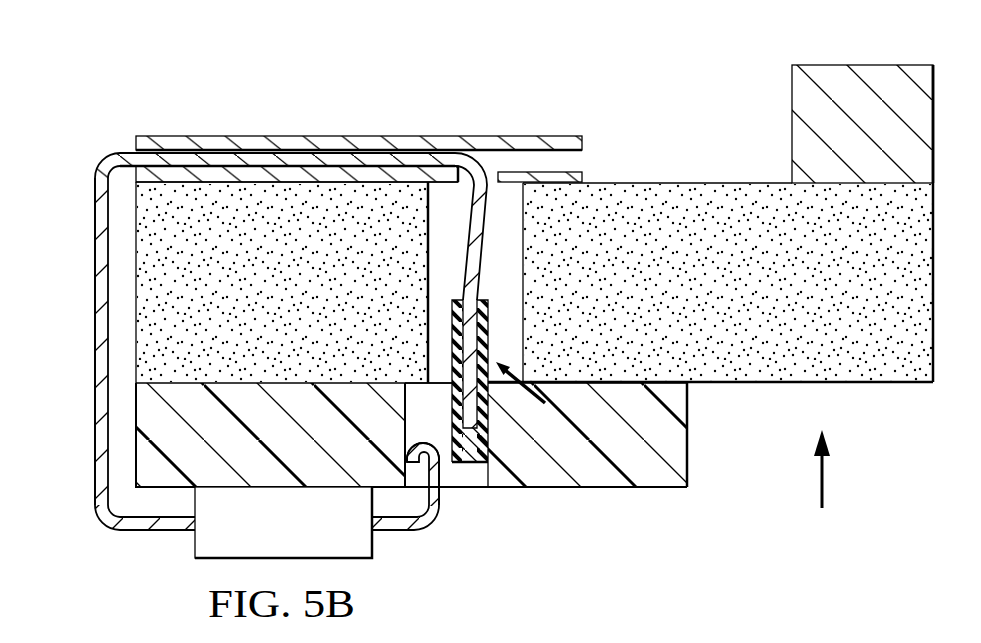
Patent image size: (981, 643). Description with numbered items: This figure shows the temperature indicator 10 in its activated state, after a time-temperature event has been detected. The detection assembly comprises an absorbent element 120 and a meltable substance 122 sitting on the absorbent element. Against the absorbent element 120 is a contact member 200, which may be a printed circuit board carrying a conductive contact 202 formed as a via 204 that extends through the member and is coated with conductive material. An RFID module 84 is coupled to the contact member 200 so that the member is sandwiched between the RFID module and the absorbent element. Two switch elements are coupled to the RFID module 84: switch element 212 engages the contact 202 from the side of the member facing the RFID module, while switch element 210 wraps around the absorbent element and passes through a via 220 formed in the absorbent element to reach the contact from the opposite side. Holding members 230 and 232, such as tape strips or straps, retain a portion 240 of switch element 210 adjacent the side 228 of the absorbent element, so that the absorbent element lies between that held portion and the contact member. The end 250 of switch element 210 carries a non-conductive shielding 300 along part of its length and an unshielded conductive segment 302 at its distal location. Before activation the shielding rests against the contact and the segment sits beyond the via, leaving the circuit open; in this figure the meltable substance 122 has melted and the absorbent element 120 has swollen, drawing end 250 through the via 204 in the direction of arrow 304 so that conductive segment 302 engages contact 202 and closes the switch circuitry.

The temperature indicator 10 is at (352, 57).
The RFID module 84 is at (197, 543).
The absorbent element 120 is at (839, 378).
The meltable substance 122 is at (876, 73).
The contact member 200 is at (678, 458).
The conductive contact 202 is at (410, 402).
The via 204 is at (447, 495).
The switch element 210 is at (93, 193).
The switch element 212 is at (390, 530).
The via 220 is at (518, 250).
The side 228 is at (711, 183).
The holding member 230 is at (545, 140).
The holding member 232 is at (110, 160).
The portion 240 is at (282, 160).
The end 250 is at (515, 368).
The non-conductive shielding 300 is at (523, 318).
The conductive segment 302 is at (467, 457).
The arrow 304 is at (823, 476).